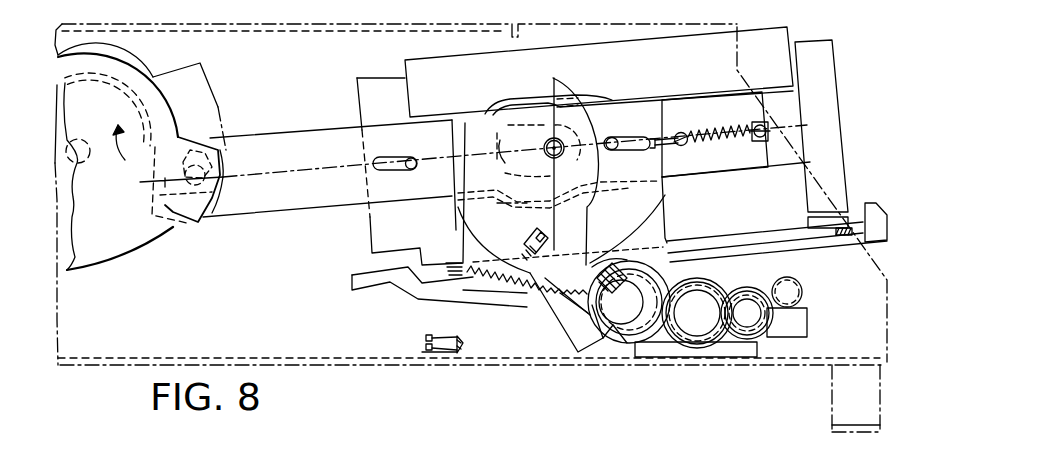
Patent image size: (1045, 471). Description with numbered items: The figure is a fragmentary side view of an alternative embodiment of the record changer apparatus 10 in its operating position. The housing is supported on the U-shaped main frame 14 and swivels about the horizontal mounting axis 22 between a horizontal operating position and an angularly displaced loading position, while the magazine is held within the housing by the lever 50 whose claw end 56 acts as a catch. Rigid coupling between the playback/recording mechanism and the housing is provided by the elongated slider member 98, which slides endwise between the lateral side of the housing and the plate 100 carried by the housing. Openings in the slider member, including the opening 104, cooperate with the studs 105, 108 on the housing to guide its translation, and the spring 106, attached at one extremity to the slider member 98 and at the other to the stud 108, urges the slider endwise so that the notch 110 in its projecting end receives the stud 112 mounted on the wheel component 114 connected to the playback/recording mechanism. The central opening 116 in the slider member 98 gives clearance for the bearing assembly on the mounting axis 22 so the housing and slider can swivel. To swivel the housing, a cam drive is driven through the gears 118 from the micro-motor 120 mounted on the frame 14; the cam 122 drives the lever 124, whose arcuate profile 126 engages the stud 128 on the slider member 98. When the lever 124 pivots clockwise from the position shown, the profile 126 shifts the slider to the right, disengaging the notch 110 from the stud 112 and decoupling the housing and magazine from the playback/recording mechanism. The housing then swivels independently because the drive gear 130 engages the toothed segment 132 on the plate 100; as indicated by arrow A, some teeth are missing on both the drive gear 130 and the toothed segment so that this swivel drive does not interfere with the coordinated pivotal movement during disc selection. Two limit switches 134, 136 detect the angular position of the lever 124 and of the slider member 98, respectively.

The apparatus 10 is at (468, 372).
The main U-shaped frame 14 is at (867, 352).
The mounting axis 22 is at (549, 152).
The lever 50 is at (415, 290).
The claw end 56 is at (880, 210).
The slider member 98 is at (328, 200).
The plate 100 is at (462, 220).
The opening 104 is at (680, 147).
The stud 105 is at (404, 168).
The spring 106 is at (724, 140).
The stud 108 is at (684, 131).
The notch 110 is at (222, 166).
The stud 112 is at (214, 196).
The wheel component 114 is at (137, 258).
The central opening 116 is at (508, 128).
The gears 118 is at (721, 348).
The micro-motor 120 is at (800, 337).
The cam 122 is at (643, 343).
The lever 124 is at (570, 327).
The arcuate profile 126 is at (608, 154).
The stud 128 is at (624, 128).
The drive gear 130 is at (673, 240).
The toothed segment 132 is at (518, 295).
The limit switch 134 is at (539, 238).
The limit switch 136 is at (444, 331).
The arrow A is at (601, 338).